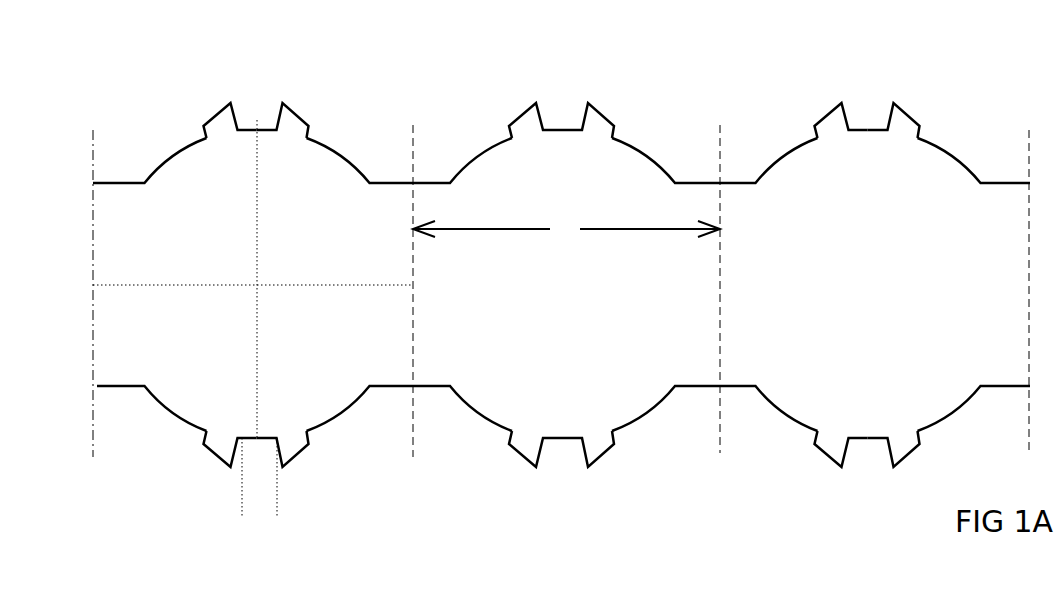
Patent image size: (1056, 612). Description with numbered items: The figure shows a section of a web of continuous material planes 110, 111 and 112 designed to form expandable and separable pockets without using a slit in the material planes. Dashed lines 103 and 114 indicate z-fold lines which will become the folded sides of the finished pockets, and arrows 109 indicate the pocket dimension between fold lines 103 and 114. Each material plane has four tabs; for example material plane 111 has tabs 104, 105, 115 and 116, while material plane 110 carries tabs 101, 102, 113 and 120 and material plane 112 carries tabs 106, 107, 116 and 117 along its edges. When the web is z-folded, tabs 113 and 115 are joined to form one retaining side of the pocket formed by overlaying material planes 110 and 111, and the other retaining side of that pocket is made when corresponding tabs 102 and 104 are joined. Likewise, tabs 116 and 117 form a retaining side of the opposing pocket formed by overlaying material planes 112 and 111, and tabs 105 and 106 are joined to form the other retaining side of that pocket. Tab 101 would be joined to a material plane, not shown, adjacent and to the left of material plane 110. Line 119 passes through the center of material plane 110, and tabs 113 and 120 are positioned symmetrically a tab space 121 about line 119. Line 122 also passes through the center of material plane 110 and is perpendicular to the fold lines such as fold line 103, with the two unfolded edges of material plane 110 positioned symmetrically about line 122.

The tab 101 is at (215, 102).
The tab 102 is at (305, 116).
The dashed line 103 is at (408, 122).
The tab 104 is at (527, 118).
The tab 105 is at (600, 118).
The tab 106 is at (825, 102).
The tab 107 is at (917, 120).
The arrows 109 is at (639, 237).
The material plane 110 is at (217, 256).
The material plane 111 is at (522, 293).
The material plane 112 is at (833, 291).
The tab 113 is at (293, 439).
The dashed line 114 is at (715, 125).
The tab 115 is at (528, 456).
The tab 116 is at (603, 447).
The tab 117 is at (828, 453).
The line 119 is at (255, 352).
The tab 120 is at (222, 447).
The tab space 121 is at (263, 489).
The line 122 is at (323, 283).